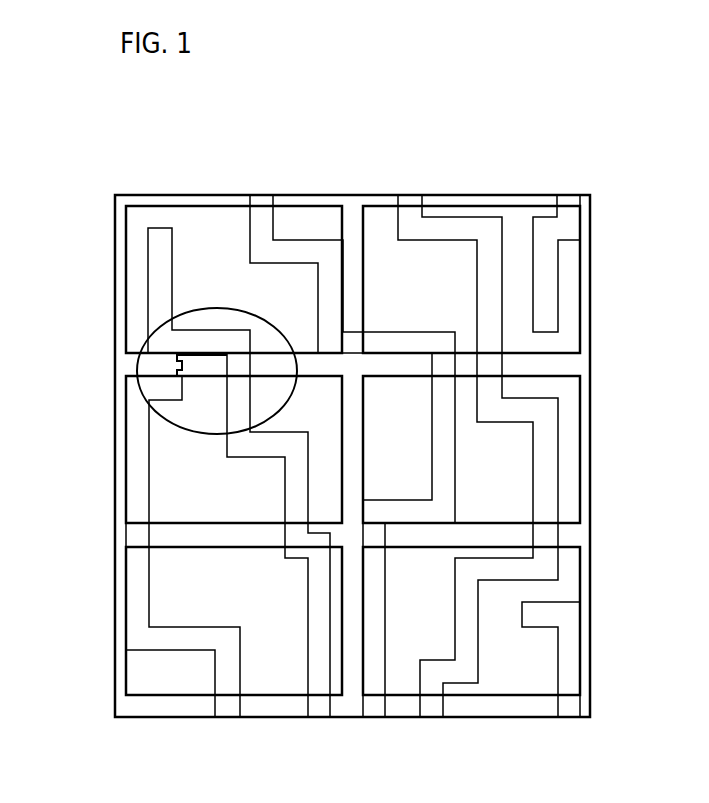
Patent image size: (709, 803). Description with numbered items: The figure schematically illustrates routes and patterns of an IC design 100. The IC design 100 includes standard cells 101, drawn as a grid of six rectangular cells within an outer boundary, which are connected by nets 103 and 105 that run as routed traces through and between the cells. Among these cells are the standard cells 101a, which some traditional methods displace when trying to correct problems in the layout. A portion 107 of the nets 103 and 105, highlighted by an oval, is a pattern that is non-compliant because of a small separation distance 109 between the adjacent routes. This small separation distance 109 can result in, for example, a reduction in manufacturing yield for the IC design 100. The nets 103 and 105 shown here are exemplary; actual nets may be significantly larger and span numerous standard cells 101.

The IC design 100 is at (187, 112).
The standard cells 101 is at (580, 285).
The standard cells 101a is at (125, 273).
The net 103 is at (149, 492).
The net 105 is at (278, 432).
The portion 107 is at (229, 309).
The separation distance 109 is at (177, 365).